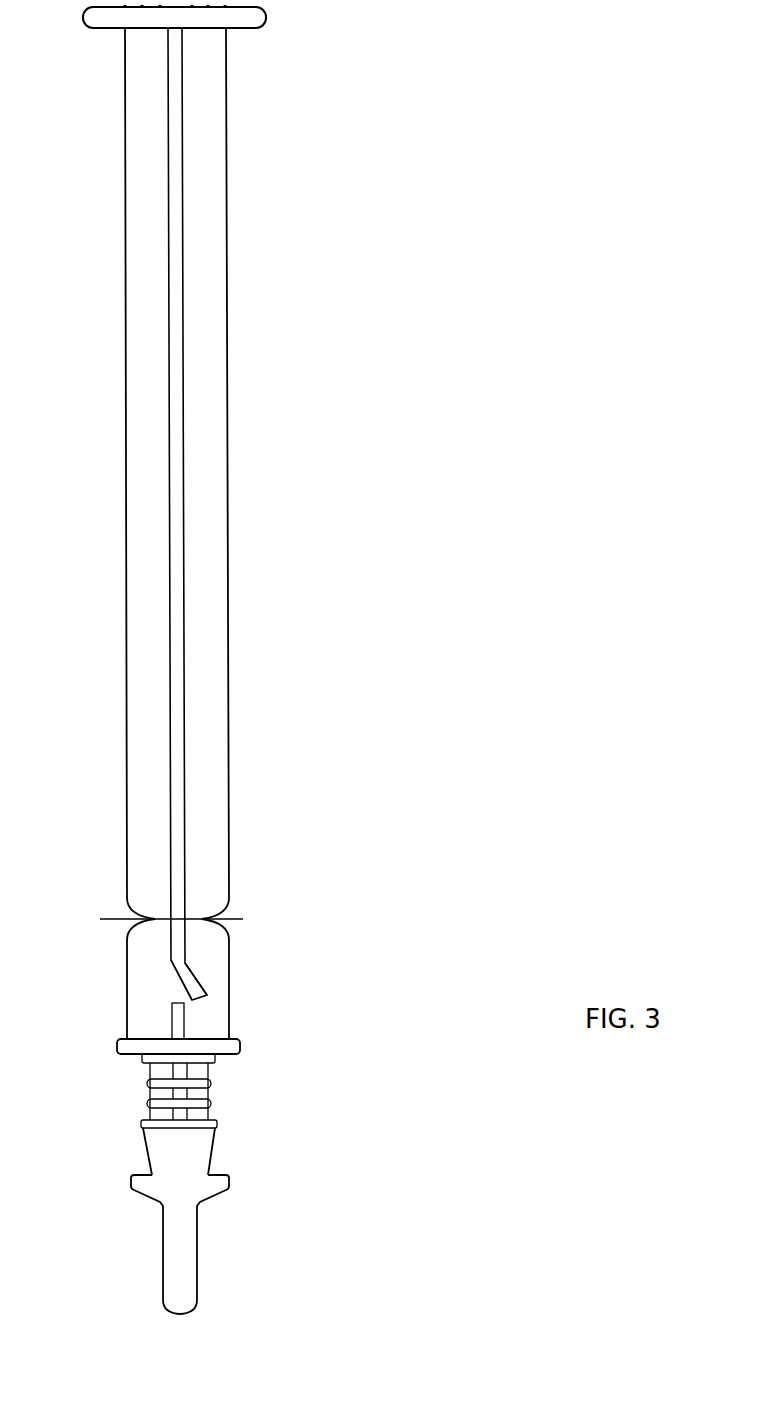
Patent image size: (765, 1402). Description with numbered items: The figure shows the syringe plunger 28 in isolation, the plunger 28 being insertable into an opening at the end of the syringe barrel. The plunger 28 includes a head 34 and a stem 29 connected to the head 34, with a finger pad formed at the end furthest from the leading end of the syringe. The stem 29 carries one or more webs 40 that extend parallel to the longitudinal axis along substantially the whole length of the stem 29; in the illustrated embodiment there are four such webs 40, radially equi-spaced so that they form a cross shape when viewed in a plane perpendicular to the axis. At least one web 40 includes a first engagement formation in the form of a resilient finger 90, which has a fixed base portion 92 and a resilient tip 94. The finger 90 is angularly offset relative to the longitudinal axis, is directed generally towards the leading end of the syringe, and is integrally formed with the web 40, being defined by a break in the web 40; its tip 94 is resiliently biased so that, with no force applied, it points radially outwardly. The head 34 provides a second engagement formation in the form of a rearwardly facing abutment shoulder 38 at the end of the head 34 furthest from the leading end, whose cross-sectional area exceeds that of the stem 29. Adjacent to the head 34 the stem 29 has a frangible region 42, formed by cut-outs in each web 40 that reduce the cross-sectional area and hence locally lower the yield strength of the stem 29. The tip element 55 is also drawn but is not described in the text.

The plunger 28 is at (256, 533).
The stem 29 is at (200, 327).
The web 40 is at (233, 487).
The frangible region 42 is at (235, 910).
The resilient finger 90 is at (203, 973).
The fixed base portion 92 is at (192, 963).
The resilient tip 94 is at (212, 998).
The abutment shoulder 38 is at (112, 1035).
The head 34 is at (247, 1050).
The luer tip 55 is at (227, 1168).